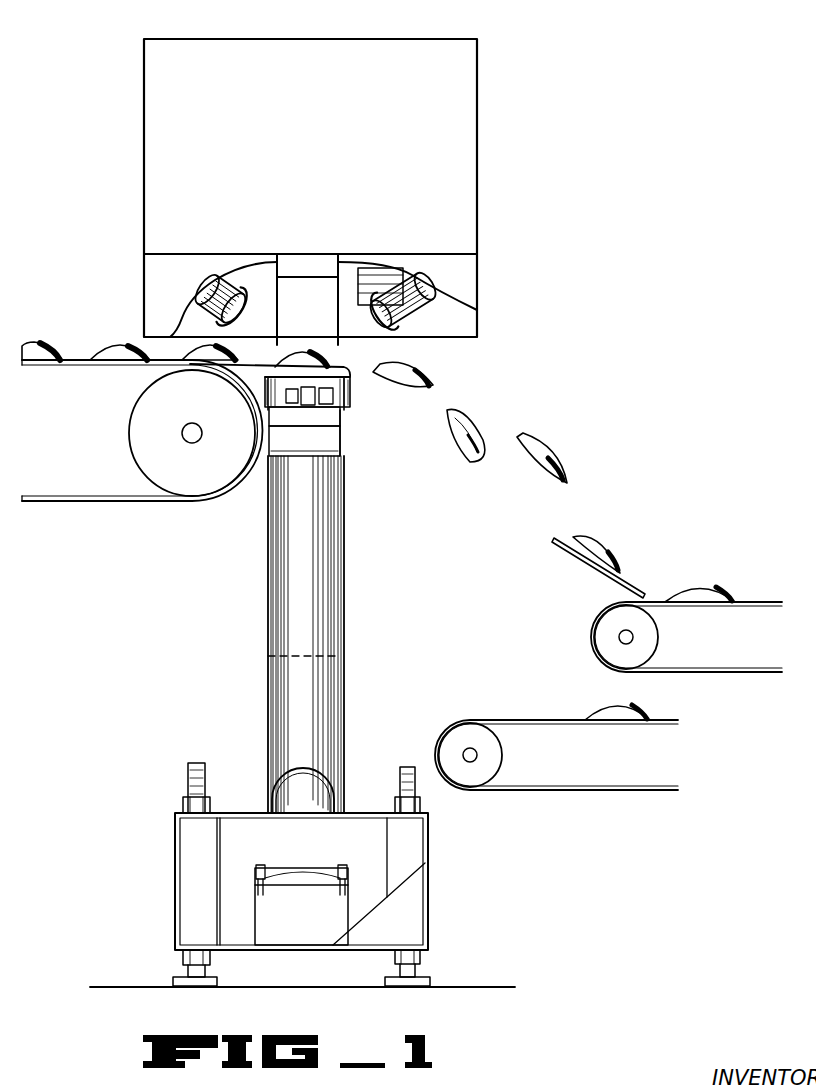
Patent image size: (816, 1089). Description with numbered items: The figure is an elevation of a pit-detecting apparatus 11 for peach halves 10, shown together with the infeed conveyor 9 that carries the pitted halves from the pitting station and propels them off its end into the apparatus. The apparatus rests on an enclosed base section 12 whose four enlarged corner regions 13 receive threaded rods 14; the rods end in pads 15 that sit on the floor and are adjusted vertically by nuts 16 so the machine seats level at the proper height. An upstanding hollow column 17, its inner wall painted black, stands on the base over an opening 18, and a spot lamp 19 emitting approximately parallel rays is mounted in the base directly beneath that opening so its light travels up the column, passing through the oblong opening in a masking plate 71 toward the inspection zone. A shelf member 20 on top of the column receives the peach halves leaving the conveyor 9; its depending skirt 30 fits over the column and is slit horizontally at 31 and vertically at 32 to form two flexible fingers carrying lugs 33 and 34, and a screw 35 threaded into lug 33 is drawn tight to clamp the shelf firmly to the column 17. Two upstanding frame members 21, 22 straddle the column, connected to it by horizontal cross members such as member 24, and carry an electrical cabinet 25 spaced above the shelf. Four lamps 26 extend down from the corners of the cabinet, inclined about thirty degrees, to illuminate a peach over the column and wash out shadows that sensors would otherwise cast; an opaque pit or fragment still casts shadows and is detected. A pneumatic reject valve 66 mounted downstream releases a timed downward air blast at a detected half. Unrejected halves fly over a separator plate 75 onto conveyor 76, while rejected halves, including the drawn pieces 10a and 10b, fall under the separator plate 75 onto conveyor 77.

The detecting apparatus 11 is at (563, 68).
The electrical cabinet 25 is at (477, 161).
The upstanding frame member 22 is at (302, 272).
The upstanding frame member 21 is at (318, 303).
The pneumatic reject valve 66 is at (372, 282).
The lamps 26 is at (385, 320).
The conveyor 9 is at (88, 368).
The peach halves 10 is at (112, 343).
The article half 10a is at (548, 468).
The article half 10b is at (458, 450).
The shelf member 20 is at (352, 370).
The depending skirt 30 is at (347, 410).
The horizontal slit 31 is at (318, 399).
The vertical slit 32 is at (275, 430).
The lug 33 is at (286, 397).
The lug 34 is at (333, 391).
The screw 35 is at (346, 418).
The horizontal cross member 24 is at (270, 452).
The hollow column 17 is at (267, 569).
The masking plate 71 is at (267, 655).
The separator plate 75 is at (570, 552).
The conveyor 76 is at (752, 602).
The conveyor 77 is at (520, 720).
The enclosed base section 12 is at (428, 886).
The enlarged corner regions 13 is at (190, 836).
The threaded rods 14 is at (188, 772).
The pads 15 is at (175, 976).
The nuts 16 is at (183, 805).
The opening 18 is at (322, 812).
The lamp 19 is at (314, 918).